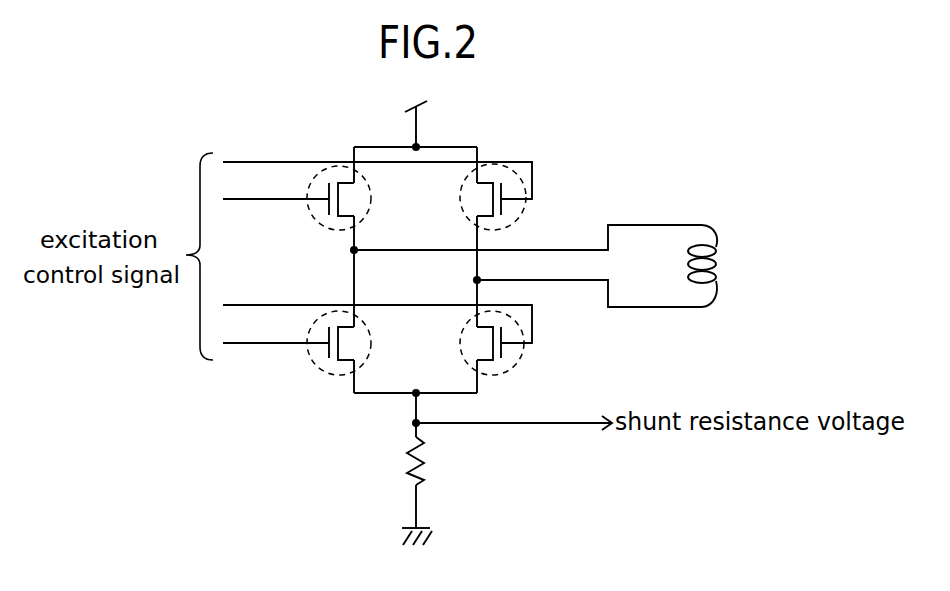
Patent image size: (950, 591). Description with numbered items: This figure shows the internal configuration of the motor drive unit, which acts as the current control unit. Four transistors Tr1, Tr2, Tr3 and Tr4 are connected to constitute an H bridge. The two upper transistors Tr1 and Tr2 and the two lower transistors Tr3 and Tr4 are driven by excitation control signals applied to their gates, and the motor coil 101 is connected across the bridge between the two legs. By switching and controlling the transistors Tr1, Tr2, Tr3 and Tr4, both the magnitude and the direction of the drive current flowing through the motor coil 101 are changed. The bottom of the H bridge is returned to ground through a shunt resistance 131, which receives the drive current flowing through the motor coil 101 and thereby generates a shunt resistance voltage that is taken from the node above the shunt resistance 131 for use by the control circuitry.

The transistor Tr1 is at (316, 221).
The transistor Tr2 is at (461, 203).
The transistor Tr3 is at (316, 366).
The transistor Tr4 is at (462, 353).
The motor coil 101 is at (717, 260).
The shunt resistance 131 is at (408, 466).